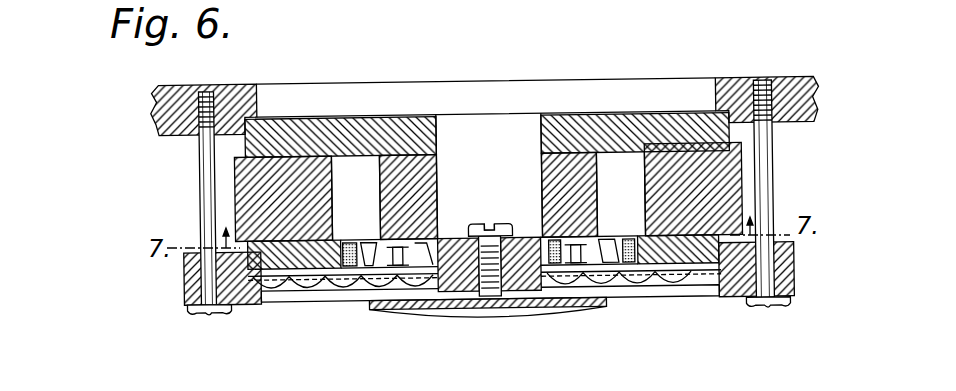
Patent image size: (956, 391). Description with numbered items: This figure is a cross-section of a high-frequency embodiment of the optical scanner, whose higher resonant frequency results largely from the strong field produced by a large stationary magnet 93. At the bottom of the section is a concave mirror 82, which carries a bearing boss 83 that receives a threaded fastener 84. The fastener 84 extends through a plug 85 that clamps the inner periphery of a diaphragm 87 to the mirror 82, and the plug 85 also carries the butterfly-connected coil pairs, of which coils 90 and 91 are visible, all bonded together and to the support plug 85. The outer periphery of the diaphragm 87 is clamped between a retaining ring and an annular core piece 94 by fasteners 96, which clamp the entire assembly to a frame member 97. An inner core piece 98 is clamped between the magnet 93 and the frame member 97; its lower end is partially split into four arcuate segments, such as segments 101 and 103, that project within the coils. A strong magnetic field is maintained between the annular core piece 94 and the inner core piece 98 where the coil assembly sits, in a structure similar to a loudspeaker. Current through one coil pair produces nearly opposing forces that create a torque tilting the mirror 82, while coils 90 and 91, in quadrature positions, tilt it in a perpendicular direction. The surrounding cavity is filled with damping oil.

The concave mirror 82 is at (393, 311).
The bearing boss 83 is at (521, 300).
The threaded fastener 84 is at (470, 232).
The plug 85 is at (522, 238).
The diaphragm 87 is at (313, 290).
The coil 90 is at (355, 240).
The coil 91 is at (624, 250).
The magnet 93 is at (728, 182).
The annular core piece 94 is at (691, 260).
The fasteners 96 is at (777, 149).
The frame member 97 is at (740, 82).
The inner core piece 98 is at (628, 128).
The segmented arcuate lower end 101 is at (604, 262).
The segmented arcuate lower end 103 is at (370, 272).